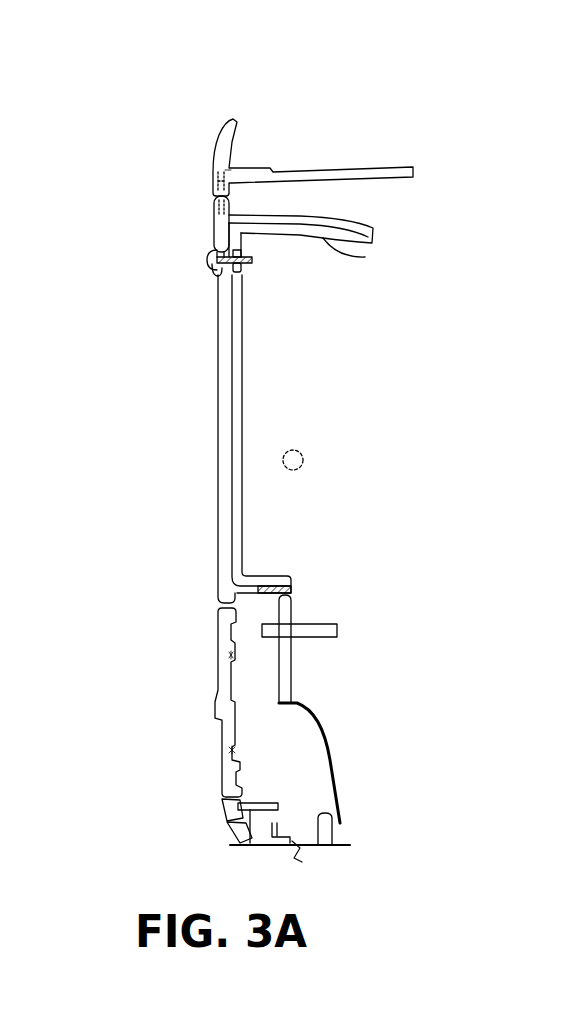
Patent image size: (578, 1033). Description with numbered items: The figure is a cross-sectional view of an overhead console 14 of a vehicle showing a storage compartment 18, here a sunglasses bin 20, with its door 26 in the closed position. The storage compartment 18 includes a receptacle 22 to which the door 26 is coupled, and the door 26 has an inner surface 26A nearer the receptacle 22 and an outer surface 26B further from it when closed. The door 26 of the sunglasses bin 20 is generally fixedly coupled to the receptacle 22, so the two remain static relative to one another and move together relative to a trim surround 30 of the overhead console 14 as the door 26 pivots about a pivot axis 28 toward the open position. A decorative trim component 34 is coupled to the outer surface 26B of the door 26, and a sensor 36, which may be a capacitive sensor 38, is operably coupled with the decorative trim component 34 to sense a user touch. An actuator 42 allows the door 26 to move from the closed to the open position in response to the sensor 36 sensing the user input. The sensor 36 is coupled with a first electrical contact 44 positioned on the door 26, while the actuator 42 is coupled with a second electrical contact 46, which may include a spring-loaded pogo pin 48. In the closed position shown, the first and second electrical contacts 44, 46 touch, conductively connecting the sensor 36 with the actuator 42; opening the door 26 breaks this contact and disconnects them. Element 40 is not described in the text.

The overhead console 14 is at (344, 110).
The storage compartment 18 is at (214, 332).
The sunglasses bin 20 is at (198, 397).
The receptacle 22 is at (365, 257).
The door 26 is at (217, 460).
The inner surface 26A is at (245, 547).
The outer surface 26B is at (217, 513).
The pivot axis 28 is at (297, 452).
The trim surround 30 is at (221, 130).
The decorative trim component 34 is at (213, 247).
The sensor 36 is at (252, 256).
The capacitive sensor 38 is at (243, 268).
The clip 40 is at (210, 259).
The actuator 42 is at (231, 175).
The first electrical contact 44 is at (298, 592).
The second electrical contact 46 is at (292, 600).
The pogo pin 48 is at (292, 618).